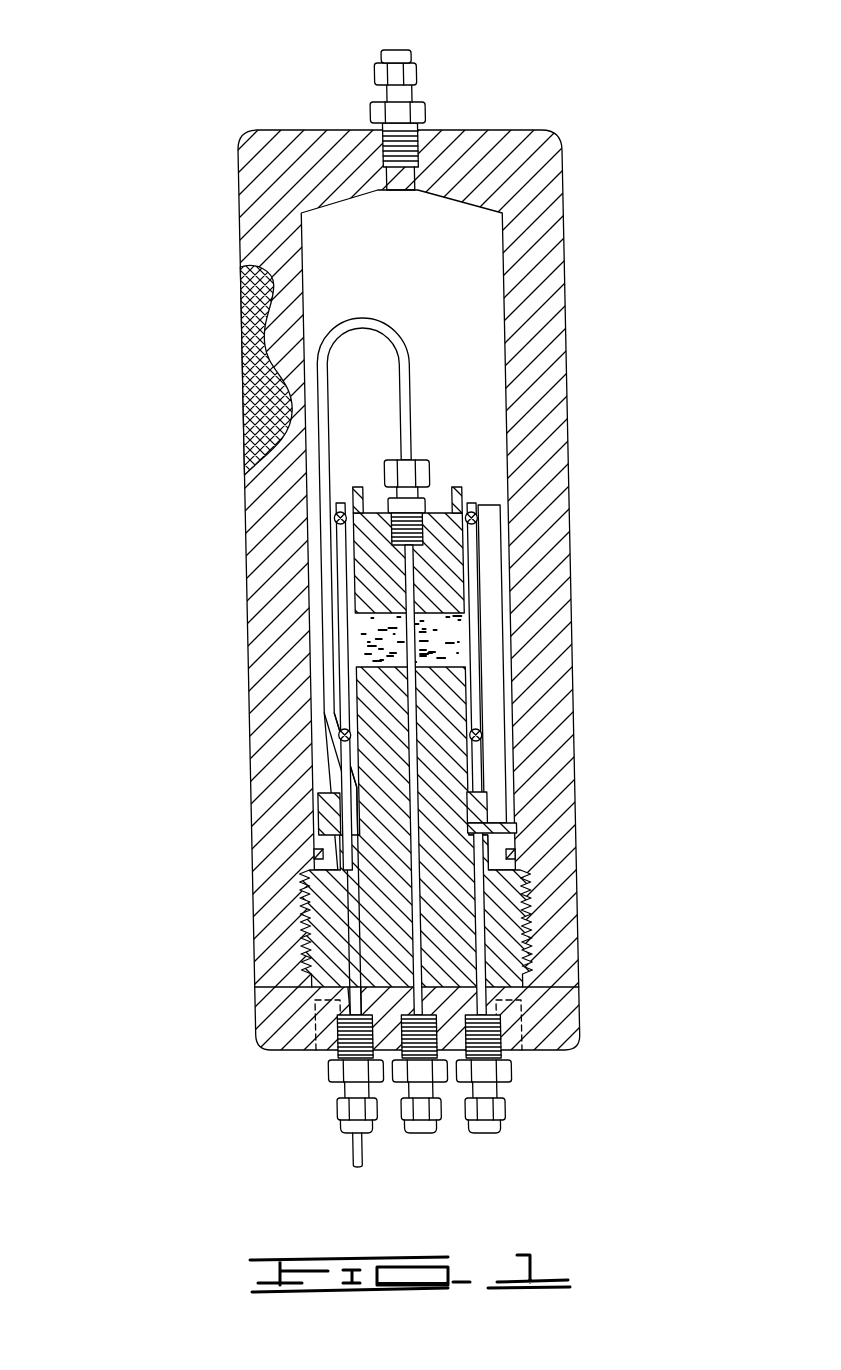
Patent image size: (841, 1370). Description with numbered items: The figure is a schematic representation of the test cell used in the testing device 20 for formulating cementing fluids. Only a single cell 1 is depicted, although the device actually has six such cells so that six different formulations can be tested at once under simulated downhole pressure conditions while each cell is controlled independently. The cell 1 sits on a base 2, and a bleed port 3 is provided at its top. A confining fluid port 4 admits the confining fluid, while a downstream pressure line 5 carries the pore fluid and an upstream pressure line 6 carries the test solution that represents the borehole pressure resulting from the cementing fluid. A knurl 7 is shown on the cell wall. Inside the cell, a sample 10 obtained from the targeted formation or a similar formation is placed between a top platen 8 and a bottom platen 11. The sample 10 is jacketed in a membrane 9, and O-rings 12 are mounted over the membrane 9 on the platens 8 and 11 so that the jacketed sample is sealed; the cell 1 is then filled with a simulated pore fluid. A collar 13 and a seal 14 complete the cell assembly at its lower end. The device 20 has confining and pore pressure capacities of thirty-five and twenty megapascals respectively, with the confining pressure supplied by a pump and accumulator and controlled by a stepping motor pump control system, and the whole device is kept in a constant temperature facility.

The testing device 20 is at (190, 93).
The cell 1 is at (557, 290).
The base 2 is at (560, 1019).
The bleed port 3 is at (411, 54).
The confining fluid port 4 is at (464, 1130).
The downstream pressure line 5 is at (329, 1148).
The upstream pressure line 6 is at (402, 1135).
The knurl 7 is at (237, 332).
The top platen 8 is at (432, 560).
The membrane 9 is at (480, 637).
The sample 10 is at (345, 644).
The bottom platen 11 is at (364, 722).
The O-rings 12 is at (467, 735).
The collar 13 is at (496, 815).
The seal 14 is at (297, 853).